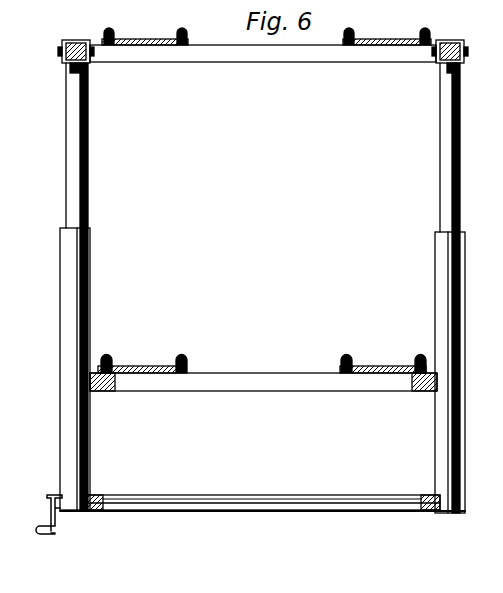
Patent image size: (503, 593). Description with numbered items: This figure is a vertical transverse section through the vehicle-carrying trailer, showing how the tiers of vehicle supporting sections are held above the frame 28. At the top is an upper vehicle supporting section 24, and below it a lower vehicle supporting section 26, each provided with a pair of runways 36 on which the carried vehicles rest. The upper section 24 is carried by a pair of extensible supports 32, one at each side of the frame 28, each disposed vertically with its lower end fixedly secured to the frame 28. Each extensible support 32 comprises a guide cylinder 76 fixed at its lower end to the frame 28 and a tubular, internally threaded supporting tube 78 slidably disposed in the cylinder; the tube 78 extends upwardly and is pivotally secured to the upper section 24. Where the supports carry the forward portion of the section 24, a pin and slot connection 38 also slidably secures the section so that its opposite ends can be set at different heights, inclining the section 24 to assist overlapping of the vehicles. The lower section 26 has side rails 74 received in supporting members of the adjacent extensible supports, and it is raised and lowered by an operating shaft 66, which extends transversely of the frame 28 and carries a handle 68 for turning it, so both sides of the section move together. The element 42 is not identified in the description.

The upper vehicle supporting section 24 is at (336, 50).
The lower vehicle supporting section 26 is at (290, 380).
The frame 28 is at (332, 512).
The extensible support 32 is at (279, 288).
The runway 36 is at (142, 42).
The pin and slot connection 38 is at (60, 61).
The upper frame member 42 is at (17, 4).
The operating shaft 66 is at (206, 502).
The handle 68 is at (50, 521).
The side rail 74 is at (73, 44).
The guide cylinder 76 is at (80, 322).
The supporting tube 78 is at (80, 166).